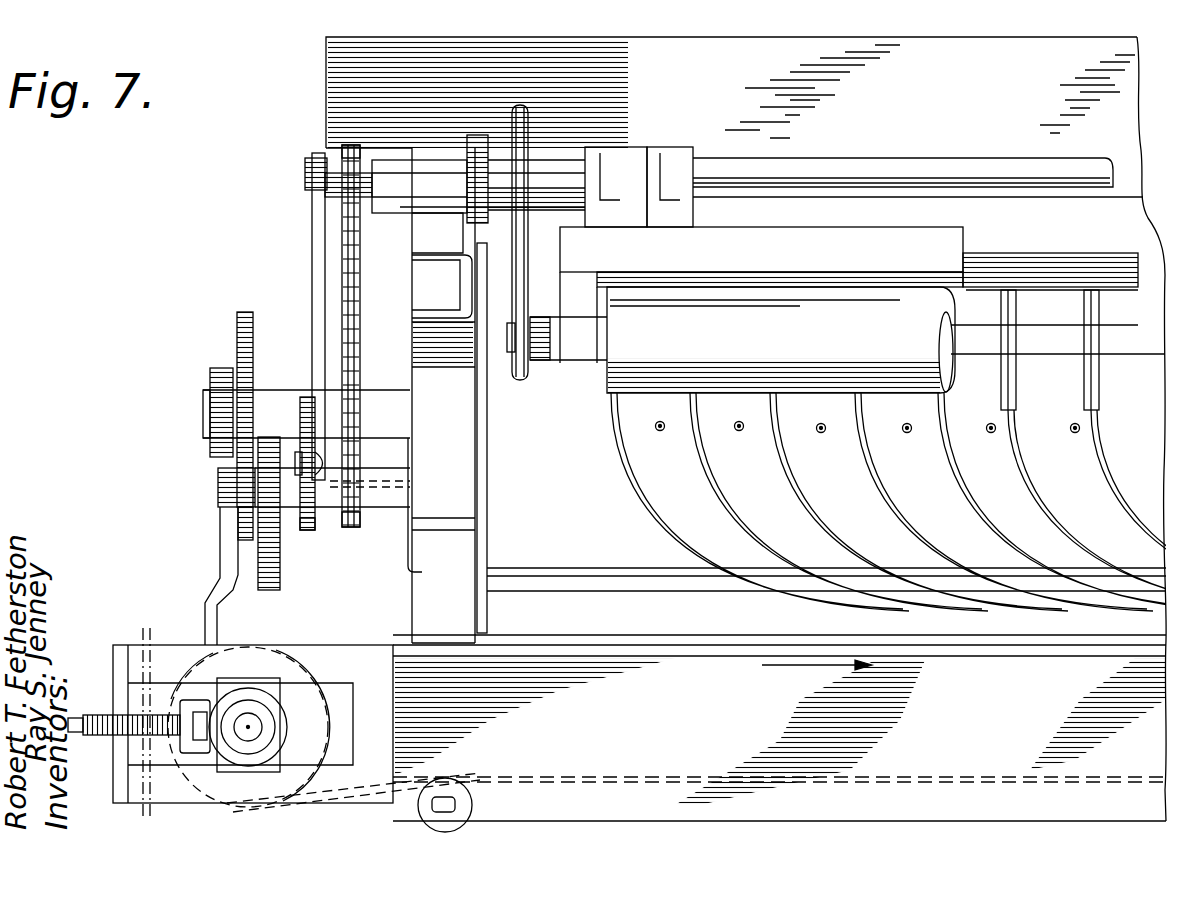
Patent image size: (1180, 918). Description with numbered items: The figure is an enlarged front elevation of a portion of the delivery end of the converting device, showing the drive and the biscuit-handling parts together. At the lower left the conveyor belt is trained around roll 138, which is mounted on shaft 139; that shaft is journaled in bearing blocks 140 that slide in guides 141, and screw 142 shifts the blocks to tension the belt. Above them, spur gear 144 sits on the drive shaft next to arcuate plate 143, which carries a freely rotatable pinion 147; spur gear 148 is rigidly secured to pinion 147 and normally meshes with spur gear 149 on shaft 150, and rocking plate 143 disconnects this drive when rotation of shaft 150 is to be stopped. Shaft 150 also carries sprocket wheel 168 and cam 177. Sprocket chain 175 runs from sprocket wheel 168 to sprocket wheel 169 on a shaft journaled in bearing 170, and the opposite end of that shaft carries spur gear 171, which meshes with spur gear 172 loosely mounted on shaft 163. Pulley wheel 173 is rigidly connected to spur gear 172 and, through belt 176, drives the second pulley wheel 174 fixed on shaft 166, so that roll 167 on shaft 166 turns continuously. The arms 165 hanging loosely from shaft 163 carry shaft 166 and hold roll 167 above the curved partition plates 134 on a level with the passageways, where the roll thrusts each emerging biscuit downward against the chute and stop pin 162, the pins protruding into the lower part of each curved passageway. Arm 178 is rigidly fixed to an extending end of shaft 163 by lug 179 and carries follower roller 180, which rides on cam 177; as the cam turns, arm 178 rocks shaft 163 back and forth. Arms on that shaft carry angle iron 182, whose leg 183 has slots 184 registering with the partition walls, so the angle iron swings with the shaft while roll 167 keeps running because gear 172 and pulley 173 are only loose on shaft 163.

The curved partition plates 134 is at (788, 496).
The roll 138 is at (330, 735).
The shaft 139 is at (250, 720).
The bearing blocks 140 is at (230, 678).
The guides 141 is at (325, 680).
The screw 142 is at (105, 715).
The arcuate plate 143 is at (223, 523).
The spur gear 144 is at (237, 322).
The pinion 147 is at (247, 542).
The spur gear 148 is at (280, 567).
The spur gear 149 is at (270, 470).
The shaft 150 is at (223, 480).
The stop pin 162 is at (735, 428).
The shaft 163 is at (953, 122).
The arms 165 is at (657, 216).
The shaft 166 is at (500, 343).
The roll 167 is at (644, 379).
The sprocket wheel 168 is at (363, 517).
The sprocket wheel 169 is at (363, 147).
The bearing 170 is at (430, 163).
The spur gear 171 is at (402, 238).
The spur gear 172 is at (480, 135).
The pulley wheel 173 is at (528, 135).
The second pulley wheel 174 is at (528, 362).
The sprocket chain 175 is at (355, 283).
The belt 176 is at (527, 255).
The cam 177 is at (310, 530).
The arm 178 is at (312, 228).
The lug 179 is at (332, 158).
The follower roller 180 is at (305, 450).
The angle iron 182 is at (995, 253).
The leg 183 is at (1055, 318).
The slots 184 is at (1063, 295).